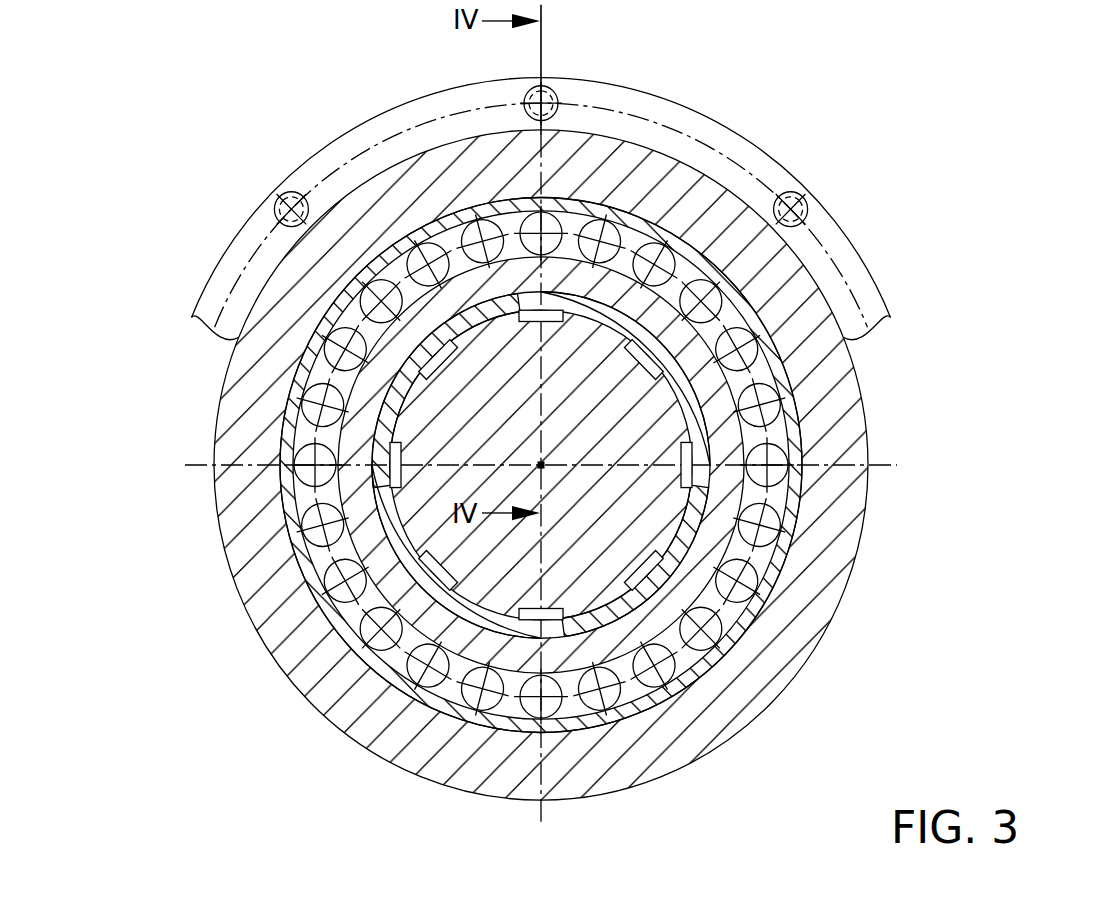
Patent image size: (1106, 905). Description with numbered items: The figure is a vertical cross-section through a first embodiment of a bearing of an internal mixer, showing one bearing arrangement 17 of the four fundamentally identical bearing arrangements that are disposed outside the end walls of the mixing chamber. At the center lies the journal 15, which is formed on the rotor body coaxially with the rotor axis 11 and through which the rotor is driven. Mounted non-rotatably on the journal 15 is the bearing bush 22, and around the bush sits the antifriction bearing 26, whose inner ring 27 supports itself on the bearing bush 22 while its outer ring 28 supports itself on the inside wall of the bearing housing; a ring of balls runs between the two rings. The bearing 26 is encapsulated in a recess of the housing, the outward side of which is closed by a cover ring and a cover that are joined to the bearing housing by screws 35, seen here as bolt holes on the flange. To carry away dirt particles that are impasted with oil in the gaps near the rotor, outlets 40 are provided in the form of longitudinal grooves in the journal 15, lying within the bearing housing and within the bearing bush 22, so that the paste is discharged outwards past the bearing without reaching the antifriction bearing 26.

The axis 11 is at (518, 442).
The journal 15 is at (658, 472).
The bearing arrangement 17 is at (541, 203).
The bearing bush 22 is at (542, 566).
The antifriction bearing 26 is at (541, 395).
The inner ring 27 is at (541, 557).
The outer ring 28 is at (541, 527).
The screws 35 is at (541, 133).
The outlets 40 is at (514, 543).